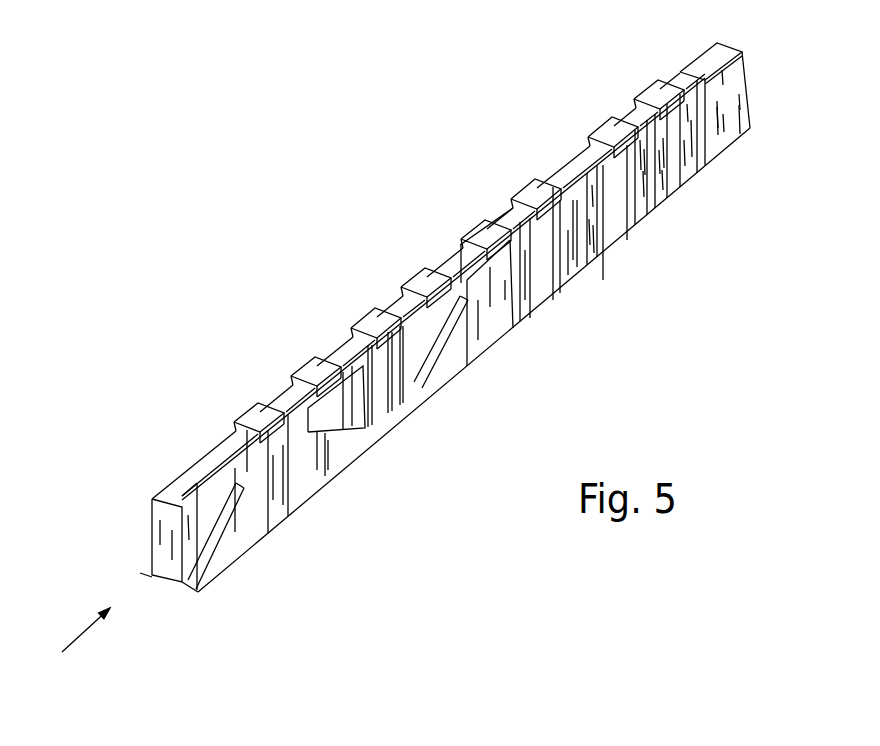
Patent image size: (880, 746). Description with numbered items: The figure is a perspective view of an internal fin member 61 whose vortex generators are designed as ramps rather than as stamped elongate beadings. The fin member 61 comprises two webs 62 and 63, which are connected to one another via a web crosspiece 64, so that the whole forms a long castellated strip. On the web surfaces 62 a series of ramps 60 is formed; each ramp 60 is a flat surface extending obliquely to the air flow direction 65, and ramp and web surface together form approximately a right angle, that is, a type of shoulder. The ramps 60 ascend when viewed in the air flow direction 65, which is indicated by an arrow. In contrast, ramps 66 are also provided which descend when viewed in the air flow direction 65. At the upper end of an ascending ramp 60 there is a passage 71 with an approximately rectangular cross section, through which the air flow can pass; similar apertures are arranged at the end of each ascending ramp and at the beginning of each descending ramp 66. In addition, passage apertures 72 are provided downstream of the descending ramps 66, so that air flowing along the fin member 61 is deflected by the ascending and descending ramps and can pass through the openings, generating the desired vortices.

The ramp 60 is at (452, 333).
The fin member 61 is at (343, 302).
The web 62 is at (322, 470).
The web 63 is at (173, 553).
The web crosspiece 64 is at (185, 485).
The air flow direction 65 is at (80, 637).
The ramp 66 is at (350, 437).
The passage 71 is at (293, 513).
The passage aperture 72 is at (367, 407).